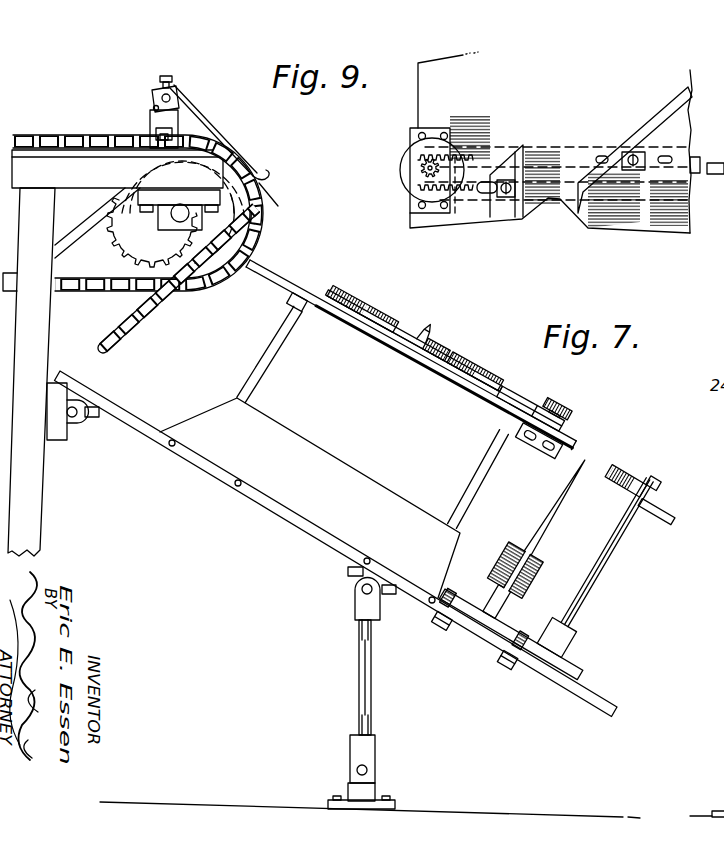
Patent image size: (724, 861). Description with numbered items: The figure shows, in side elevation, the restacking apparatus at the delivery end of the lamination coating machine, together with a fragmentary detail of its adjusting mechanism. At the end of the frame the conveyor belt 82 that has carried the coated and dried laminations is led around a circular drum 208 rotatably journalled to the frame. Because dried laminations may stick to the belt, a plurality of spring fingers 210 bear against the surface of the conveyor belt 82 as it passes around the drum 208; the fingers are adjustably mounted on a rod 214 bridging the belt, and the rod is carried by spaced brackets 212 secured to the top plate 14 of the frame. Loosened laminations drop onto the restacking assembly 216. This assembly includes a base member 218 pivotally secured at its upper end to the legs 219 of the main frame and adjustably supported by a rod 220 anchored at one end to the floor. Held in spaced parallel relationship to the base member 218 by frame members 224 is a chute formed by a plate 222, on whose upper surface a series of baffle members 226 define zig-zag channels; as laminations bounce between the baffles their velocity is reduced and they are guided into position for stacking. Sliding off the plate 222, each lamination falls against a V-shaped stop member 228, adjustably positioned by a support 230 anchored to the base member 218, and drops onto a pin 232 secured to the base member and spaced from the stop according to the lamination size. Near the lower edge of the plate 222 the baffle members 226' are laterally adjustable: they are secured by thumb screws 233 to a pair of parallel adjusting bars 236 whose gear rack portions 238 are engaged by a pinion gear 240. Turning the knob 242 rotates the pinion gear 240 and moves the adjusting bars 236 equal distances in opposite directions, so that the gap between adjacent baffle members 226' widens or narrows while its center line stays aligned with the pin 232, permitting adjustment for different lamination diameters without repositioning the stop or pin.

In FIG. 7, the top plate 14 is at (38, 150).
In FIG. 7, the conveyor belt 82 is at (90, 136).
In FIG. 7, the circular drum 208 is at (245, 228).
In FIG. 7, the spring fingers 210 is at (233, 143).
In FIG. 7, the brackets 212 is at (150, 122).
In FIG. 7, the rod 214 is at (152, 92).
In FIG. 7, the restacking assembly 216 is at (448, 338).
In FIG. 7, the base member 218 is at (133, 417).
In FIG. 7, the legs 219 is at (38, 477).
In FIG. 7, the rod 220 is at (360, 684).
In FIG. 7, the plate 222 is at (290, 283).
In FIG. 9, the plate 222 is at (652, 218).
In FIG. 7, the frame members 224 is at (277, 352).
In FIG. 7, the baffle members 226 is at (428, 337).
In FIG. 7, the adjustable baffle members 226' is at (567, 409).
In FIG. 9, the adjustable baffle members 226' is at (539, 200).
In FIG. 7, the V-shaped stop member 228 is at (625, 478).
In FIG. 7, the support 230 is at (612, 573).
In FIG. 7, the pin 232 is at (546, 530).
In FIG. 9, the thumb screws 233 is at (508, 205).
In FIG. 7, the adjusting bars 236 is at (552, 444).
In FIG. 9, the adjusting bars 236 is at (398, 196).
In FIG. 9, the gear rack portions 238 is at (463, 156).
In FIG. 9, the pinion gear 240 is at (412, 167).
In FIG. 7, the knob 242 is at (562, 406).
In FIG. 9, the knob 242 is at (420, 188).